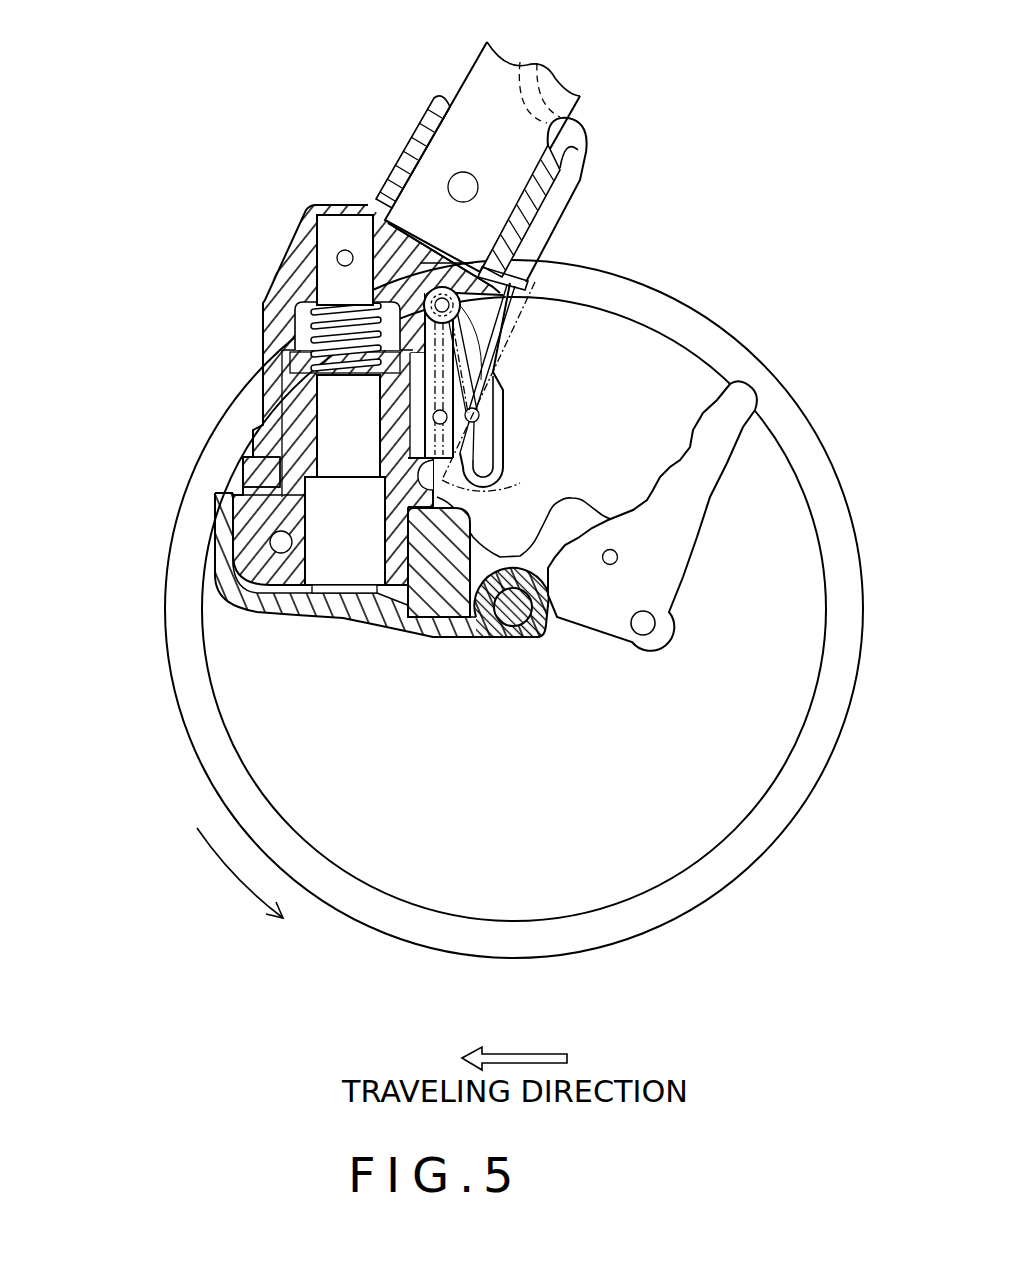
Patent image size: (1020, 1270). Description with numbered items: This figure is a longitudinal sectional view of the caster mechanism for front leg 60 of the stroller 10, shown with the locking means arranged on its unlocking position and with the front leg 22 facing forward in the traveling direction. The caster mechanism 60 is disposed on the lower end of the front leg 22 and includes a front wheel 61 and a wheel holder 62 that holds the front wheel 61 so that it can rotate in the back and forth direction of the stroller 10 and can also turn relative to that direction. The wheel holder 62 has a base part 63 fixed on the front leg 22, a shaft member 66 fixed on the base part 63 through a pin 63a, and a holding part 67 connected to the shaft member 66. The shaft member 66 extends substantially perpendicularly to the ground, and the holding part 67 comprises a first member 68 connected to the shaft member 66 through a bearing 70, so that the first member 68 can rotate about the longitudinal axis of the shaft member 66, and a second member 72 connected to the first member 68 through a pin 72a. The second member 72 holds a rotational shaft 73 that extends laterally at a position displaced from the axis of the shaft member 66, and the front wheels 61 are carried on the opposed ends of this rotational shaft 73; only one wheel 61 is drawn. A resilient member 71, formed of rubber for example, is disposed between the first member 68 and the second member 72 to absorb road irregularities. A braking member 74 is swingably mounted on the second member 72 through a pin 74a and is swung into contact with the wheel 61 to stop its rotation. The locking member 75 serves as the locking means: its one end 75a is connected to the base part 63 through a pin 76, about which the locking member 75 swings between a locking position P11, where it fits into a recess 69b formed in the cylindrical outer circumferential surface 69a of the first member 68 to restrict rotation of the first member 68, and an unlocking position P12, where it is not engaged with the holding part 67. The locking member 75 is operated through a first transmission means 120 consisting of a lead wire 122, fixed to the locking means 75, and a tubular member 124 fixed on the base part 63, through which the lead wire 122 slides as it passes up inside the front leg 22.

The stroller 10 is at (797, 203).
The front leg 22 is at (477, 83).
The caster mechanism for front leg 60 is at (218, 157).
The front wheel 61 is at (362, 905).
The wheel holder 62 is at (345, 199).
The base part 63 is at (275, 297).
The pin 63a is at (338, 255).
The shaft member 66 is at (337, 418).
The holding part 67 is at (369, 646).
The first member 68 is at (253, 530).
The cylindrical outer circumferential surface 69a is at (238, 473).
The recess 69b is at (262, 472).
The bearing 70 is at (300, 580).
The resilient member 71 is at (433, 595).
The second member 72 is at (330, 622).
The pin 72a is at (281, 542).
The rotational shaft 73 is at (513, 612).
The braking member 74 is at (680, 510).
The pin 74a is at (618, 558).
The locking member 75 is at (509, 402).
The one end of the locking member 75a is at (500, 345).
The pin 76 is at (442, 300).
The first transmission means 120 is at (594, 146).
The lead wire 122 is at (505, 298).
The tubular member 124 is at (557, 198).
The locking position P11 is at (495, 487).
The unlocking position P12 is at (505, 433).